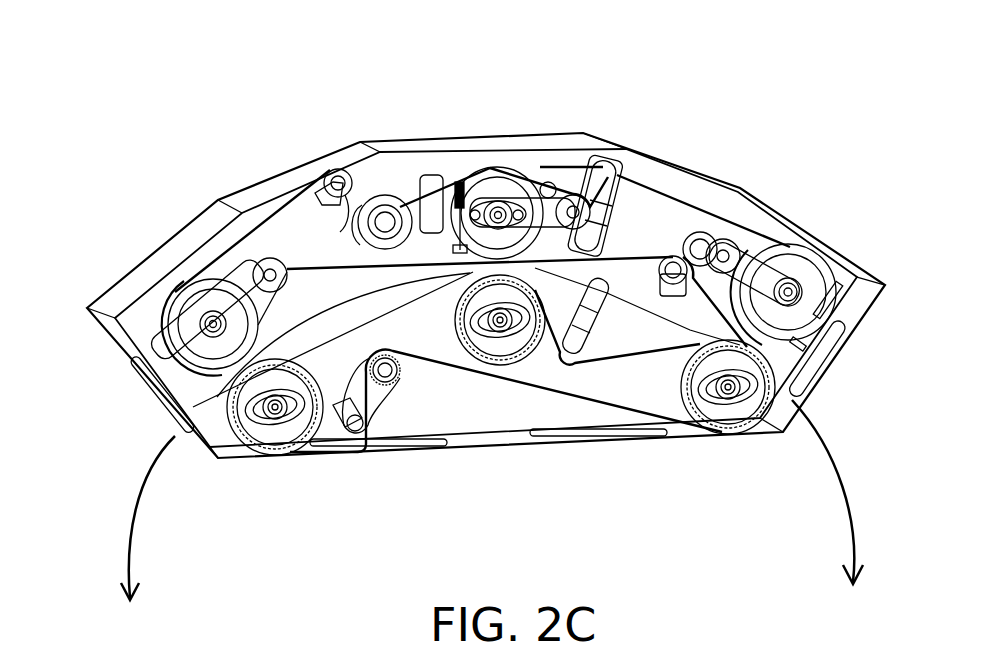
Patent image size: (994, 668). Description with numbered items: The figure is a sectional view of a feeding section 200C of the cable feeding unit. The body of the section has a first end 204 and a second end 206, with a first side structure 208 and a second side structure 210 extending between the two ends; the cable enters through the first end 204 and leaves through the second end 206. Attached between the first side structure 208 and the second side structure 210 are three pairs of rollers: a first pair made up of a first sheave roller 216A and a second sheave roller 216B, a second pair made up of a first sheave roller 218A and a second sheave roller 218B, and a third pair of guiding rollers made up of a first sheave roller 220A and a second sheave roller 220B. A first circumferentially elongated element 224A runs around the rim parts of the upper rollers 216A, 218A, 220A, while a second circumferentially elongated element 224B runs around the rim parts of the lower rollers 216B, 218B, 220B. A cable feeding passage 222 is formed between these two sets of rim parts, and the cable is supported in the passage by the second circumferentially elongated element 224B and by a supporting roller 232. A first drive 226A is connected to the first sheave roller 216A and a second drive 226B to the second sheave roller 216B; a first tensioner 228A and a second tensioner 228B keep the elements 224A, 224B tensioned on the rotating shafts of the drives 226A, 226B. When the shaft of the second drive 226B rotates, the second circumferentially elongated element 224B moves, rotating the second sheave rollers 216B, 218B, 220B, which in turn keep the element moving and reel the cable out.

The feeding section 200C is at (838, 100).
The first end 204 is at (457, 295).
The second end 206 is at (900, 323).
The first side structure 208 is at (361, 137).
The second side structure 210 is at (249, 515).
The first sheave roller 216A is at (188, 316).
The second sheave roller 216B is at (202, 439).
The first sheave roller 218A is at (514, 144).
The second sheave roller 218B is at (509, 416).
The first sheave roller 220A is at (810, 237).
The second sheave roller 220B is at (757, 469).
The cable feeding passage 222 is at (520, 500).
The first circumferentially elongated element 224A is at (554, 202).
The second circumferentially elongated element 224B is at (637, 390).
The first drive 226A is at (430, 150).
The second drive 226B is at (457, 422).
The first tensioner 228A is at (636, 143).
The second tensioner 228B is at (632, 393).
The supporting roller 232 is at (864, 358).